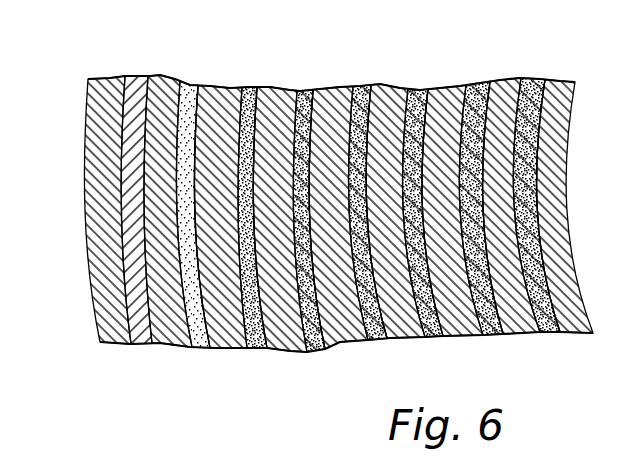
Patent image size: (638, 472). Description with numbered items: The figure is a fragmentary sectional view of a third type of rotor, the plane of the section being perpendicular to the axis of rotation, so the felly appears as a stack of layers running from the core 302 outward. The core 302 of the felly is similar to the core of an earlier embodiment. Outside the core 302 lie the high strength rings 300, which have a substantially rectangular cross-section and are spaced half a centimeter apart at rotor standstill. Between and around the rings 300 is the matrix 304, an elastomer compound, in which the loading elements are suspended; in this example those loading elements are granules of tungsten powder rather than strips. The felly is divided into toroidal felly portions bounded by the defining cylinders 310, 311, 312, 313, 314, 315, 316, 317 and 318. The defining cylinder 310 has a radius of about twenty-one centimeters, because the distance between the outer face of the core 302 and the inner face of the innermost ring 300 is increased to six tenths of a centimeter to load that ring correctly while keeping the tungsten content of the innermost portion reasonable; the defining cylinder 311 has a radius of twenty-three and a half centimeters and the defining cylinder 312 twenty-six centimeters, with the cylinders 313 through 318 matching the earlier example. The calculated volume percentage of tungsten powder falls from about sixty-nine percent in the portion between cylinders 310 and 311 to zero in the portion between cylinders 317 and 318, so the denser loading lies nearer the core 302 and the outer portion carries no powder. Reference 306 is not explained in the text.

The high strength rings 300 is at (308, 216).
The core 302 is at (576, 223).
The matrix 304 is at (133, 117).
The interfaces between layers 306 is at (262, 87).
The defining cylinder 310 is at (566, 329).
The defining cylinder 311 is at (511, 333).
The defining cylinder 312 is at (448, 336).
The defining cylinder 313 is at (390, 339).
The defining cylinder 314 is at (331, 344).
The defining cylinder 315 is at (277, 349).
The defining cylinder 316 is at (217, 348).
The defining cylinder 317 is at (158, 346).
The defining cylinder 318 is at (101, 343).